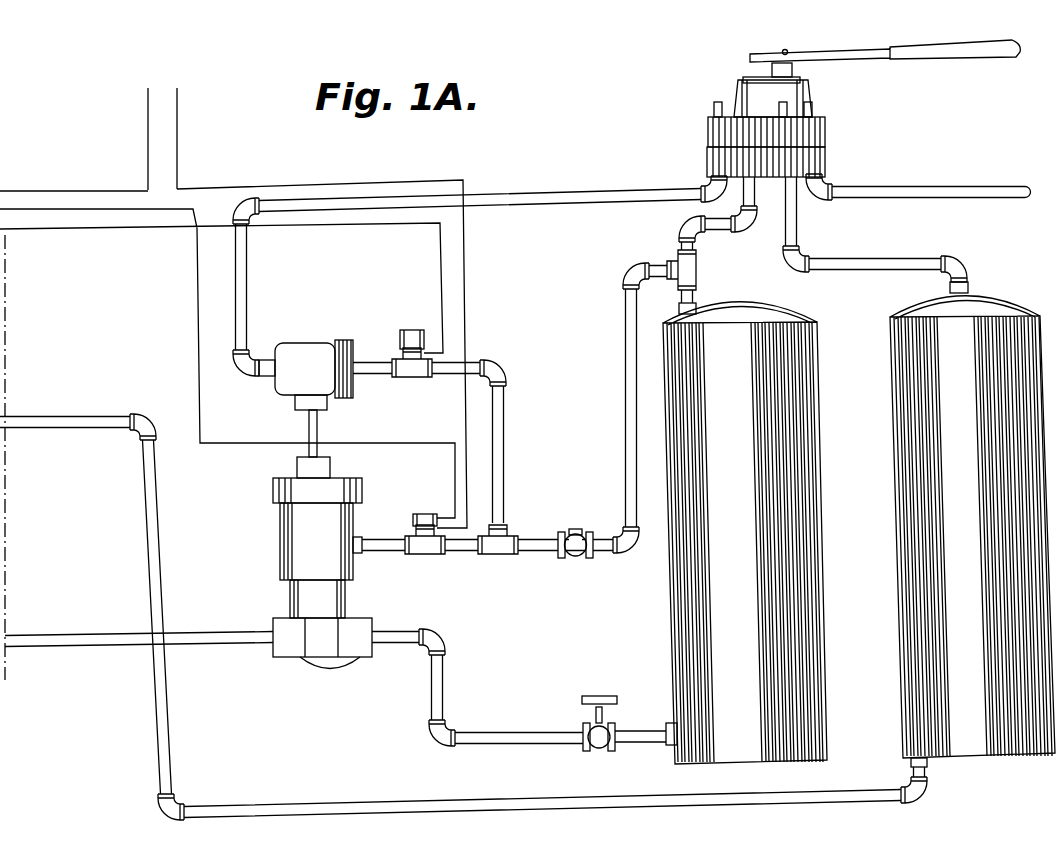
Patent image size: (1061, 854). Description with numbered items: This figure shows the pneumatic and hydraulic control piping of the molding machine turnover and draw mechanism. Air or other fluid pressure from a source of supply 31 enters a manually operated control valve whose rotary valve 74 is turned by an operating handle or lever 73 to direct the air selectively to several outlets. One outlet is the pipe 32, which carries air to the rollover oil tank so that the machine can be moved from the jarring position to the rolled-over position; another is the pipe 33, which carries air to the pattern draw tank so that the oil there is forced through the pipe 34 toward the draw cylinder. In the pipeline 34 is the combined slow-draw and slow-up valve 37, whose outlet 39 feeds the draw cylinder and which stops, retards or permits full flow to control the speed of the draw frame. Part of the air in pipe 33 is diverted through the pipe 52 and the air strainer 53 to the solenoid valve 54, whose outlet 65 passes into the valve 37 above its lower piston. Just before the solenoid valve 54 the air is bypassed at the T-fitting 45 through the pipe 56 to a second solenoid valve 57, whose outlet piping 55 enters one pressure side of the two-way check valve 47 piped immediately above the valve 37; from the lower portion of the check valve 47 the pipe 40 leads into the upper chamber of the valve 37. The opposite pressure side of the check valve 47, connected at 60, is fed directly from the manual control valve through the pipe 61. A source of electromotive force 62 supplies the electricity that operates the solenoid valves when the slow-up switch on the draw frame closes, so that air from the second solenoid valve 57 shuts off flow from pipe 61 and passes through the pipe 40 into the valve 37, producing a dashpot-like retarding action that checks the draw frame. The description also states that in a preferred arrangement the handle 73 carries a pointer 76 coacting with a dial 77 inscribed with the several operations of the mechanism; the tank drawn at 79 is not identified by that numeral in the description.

The source of electromotive force 62 is at (168, 98).
The pipe 61 is at (528, 195).
The rotary valve 74 is at (710, 128).
The operating handle 73 is at (856, 58).
The source of supply 31 is at (888, 186).
The pipe 32 is at (888, 262).
The pipe 33 is at (719, 231).
The two-way check valve 47 is at (320, 327).
The connection 60 is at (255, 380).
The pipe 40 is at (308, 428).
The outlet piping 55 is at (381, 374).
The second solenoid valve 57 is at (404, 378).
The pipe 56 is at (497, 459).
The pipe 52 is at (626, 338).
The air strainer 53 is at (567, 539).
The outlet 65 is at (386, 540).
The solenoid valve 54 is at (431, 558).
The T-fitting 45 is at (497, 560).
The combined slow-draw and slow-up valve 37 is at (282, 543).
The pipe 34 is at (446, 688).
The dial 77 is at (150, 545).
The outlet 39 is at (83, 647).
The tank 79 is at (688, 642).
The pointer 76 is at (918, 648).